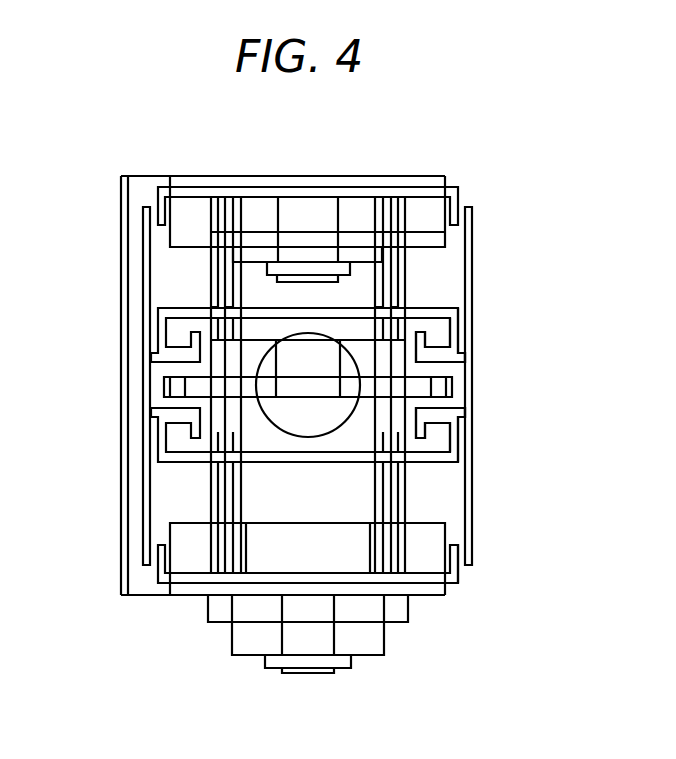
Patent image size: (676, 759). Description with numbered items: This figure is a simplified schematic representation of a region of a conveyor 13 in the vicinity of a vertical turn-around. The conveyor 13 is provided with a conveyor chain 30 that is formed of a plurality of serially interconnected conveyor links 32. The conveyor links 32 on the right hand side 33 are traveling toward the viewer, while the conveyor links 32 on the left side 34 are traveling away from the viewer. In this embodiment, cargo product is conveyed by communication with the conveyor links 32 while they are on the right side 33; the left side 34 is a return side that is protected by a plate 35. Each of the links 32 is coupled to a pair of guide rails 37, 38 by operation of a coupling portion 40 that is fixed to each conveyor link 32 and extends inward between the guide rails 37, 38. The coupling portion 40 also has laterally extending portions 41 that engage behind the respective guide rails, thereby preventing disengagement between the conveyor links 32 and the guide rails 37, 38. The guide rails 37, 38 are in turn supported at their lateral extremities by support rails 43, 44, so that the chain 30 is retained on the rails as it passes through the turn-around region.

The conveyor 13 is at (69, 133).
The conveyor chain 30 is at (496, 213).
The conveyor links 32 is at (143, 535).
The right hand side 33 is at (494, 545).
The left side 34 is at (102, 599).
The plate 35 is at (122, 498).
The guide rail 37 is at (433, 307).
The guide rail 38 is at (443, 471).
The coupling portion 40 is at (455, 396).
The laterally extending portions 41 is at (448, 343).
The support rail 43 is at (462, 187).
The support rail 44 is at (463, 575).